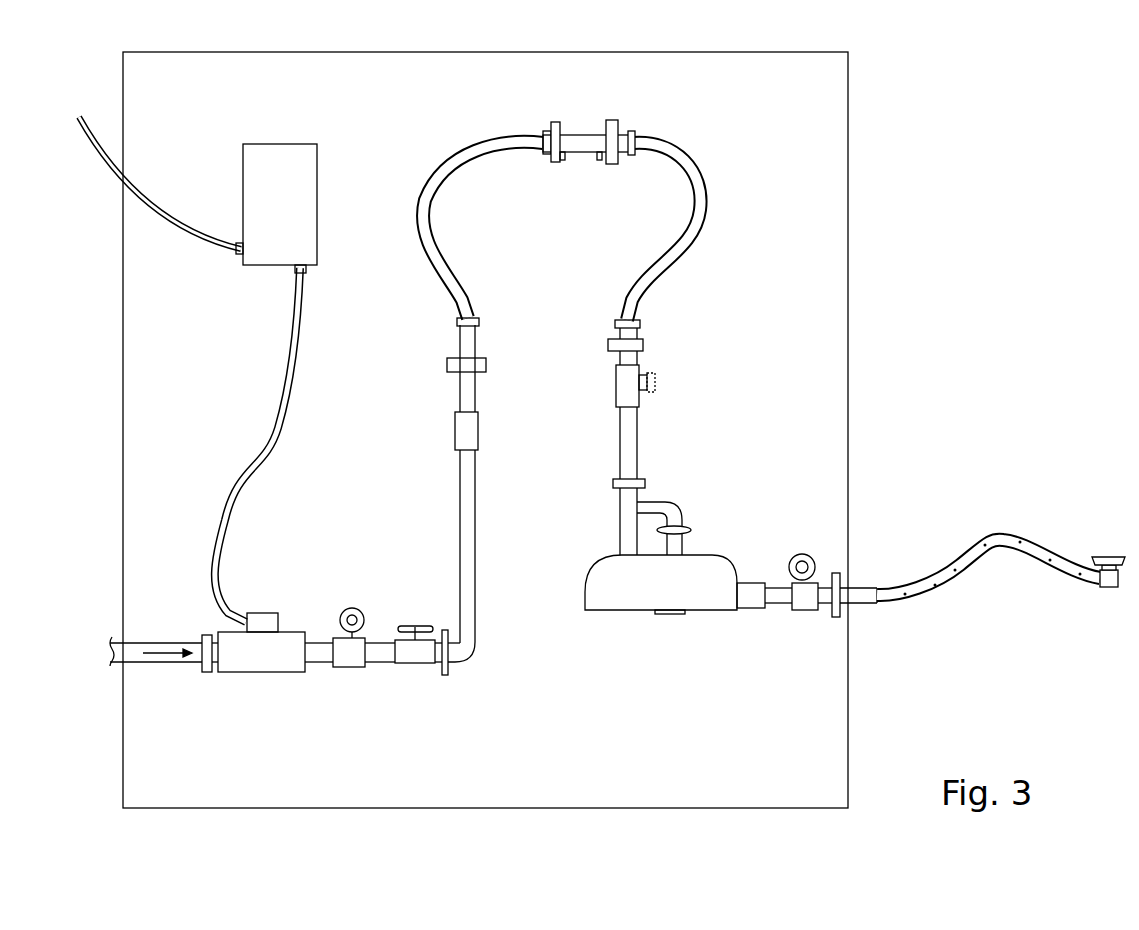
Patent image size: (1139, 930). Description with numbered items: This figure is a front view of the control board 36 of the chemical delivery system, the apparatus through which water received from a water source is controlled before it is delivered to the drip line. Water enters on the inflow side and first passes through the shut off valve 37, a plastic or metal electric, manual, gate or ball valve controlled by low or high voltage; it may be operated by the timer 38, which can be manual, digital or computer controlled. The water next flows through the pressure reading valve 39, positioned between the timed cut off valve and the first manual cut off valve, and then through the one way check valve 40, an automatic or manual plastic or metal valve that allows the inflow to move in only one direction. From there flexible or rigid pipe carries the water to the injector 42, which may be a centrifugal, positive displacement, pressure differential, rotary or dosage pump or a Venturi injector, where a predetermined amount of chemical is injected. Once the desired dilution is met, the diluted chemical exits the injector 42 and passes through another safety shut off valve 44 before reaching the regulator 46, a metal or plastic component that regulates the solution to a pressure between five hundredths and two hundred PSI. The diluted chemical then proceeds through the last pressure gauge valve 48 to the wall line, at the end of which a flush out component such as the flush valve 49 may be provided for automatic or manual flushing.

The control board 36 is at (150, 393).
The shut off valve 37 is at (239, 662).
The timer 38 is at (302, 166).
The pressure reading valve 39 is at (354, 667).
The one way check valve 40 is at (455, 428).
The injector 42 is at (611, 128).
The safety shut off valve 44 is at (632, 372).
The regulator 46 is at (607, 600).
The pressure gauge valve 48 is at (803, 563).
The flush valve 49 is at (1109, 590).